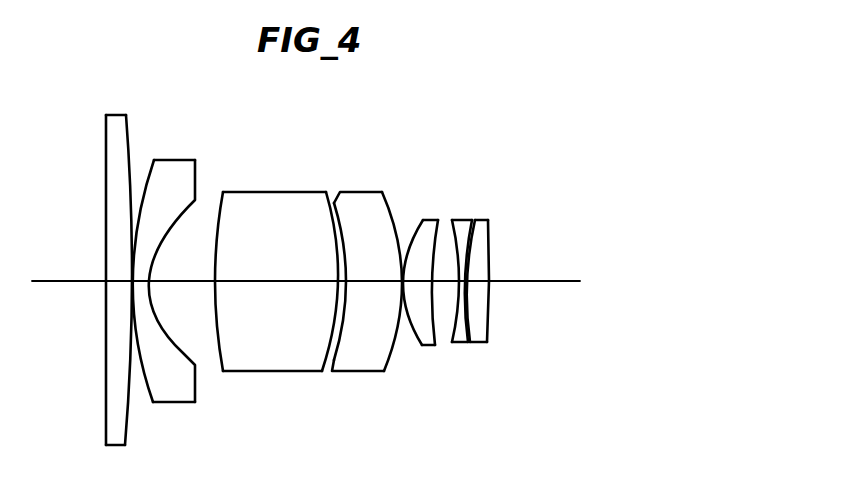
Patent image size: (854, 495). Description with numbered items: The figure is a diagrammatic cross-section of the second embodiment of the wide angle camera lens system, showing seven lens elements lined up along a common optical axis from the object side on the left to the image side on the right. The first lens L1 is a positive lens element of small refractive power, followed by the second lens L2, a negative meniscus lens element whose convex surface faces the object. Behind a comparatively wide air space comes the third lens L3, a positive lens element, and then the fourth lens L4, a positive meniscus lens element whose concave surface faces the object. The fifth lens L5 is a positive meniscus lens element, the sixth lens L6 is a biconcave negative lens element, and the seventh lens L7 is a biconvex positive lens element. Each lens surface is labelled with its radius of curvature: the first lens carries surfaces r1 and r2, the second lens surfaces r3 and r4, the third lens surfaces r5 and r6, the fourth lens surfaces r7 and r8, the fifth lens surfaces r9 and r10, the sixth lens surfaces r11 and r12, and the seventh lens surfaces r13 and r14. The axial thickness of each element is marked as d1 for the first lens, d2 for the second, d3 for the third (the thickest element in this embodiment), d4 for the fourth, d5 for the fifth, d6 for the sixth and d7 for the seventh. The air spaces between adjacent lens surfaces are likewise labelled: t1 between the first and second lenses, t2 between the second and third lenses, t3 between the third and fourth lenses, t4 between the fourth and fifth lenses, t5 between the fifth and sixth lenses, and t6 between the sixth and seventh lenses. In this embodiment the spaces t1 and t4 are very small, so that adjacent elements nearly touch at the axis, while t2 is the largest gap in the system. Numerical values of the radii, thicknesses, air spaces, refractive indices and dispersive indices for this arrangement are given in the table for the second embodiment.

The first lens L1 is at (109, 271).
The second lens L2 is at (179, 286).
The third lens L3 is at (277, 306).
The fourth lens L4 is at (367, 297).
The fifth lens L5 is at (434, 301).
The sixth lens L6 is at (487, 291).
The seventh lens L7 is at (513, 291).
The radius of curvature of lens surface r1 is at (106, 410).
The radius of curvature of lens surface r2 is at (127, 423).
The radius of curvature of lens surface r3 is at (148, 386).
The radius of curvature of lens surface r4 is at (187, 353).
The radius of curvature of lens surface r5 is at (213, 350).
The radius of curvature of lens surface r6 is at (327, 360).
The radius of curvature of lens surface r7 is at (334, 340).
The radius of curvature of lens surface r8 is at (388, 354).
The radius of curvature of lens surface r9 is at (410, 303).
The radius of curvature of lens surface r10 is at (440, 335).
The radius of curvature of lens surface r11 is at (455, 340).
The radius of curvature of lens surface r12 is at (466, 355).
The radius of curvature of lens surface r13 is at (478, 343).
The radius of curvature of lens surface r14 is at (484, 325).
The axial length of lens element d1 is at (127, 278).
The axial length of lens element d2 is at (140, 282).
The axial length of lens element d3 is at (276, 272).
The axial length of lens element d4 is at (374, 274).
The axial length of lens element d5 is at (418, 277).
The axial length of lens element d6 is at (466, 262).
The axial length of lens element d7 is at (478, 279).
The air space t1 is at (133, 283).
The air space t2 is at (182, 273).
The air space t3 is at (341, 295).
The air space t4 is at (403, 297).
The air space t5 is at (445, 292).
The air space t6 is at (463, 294).